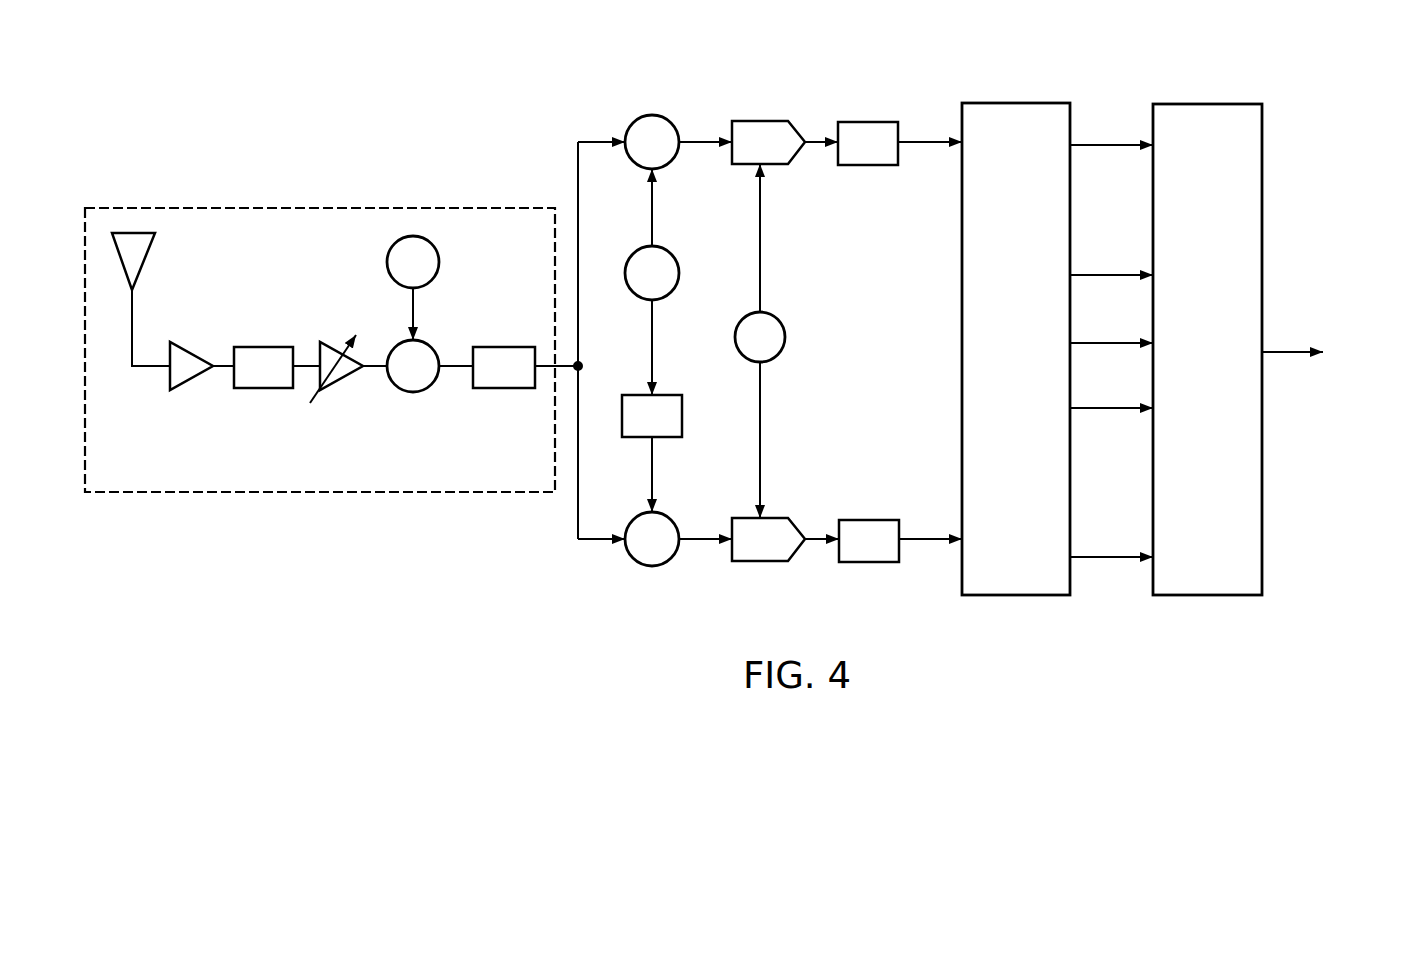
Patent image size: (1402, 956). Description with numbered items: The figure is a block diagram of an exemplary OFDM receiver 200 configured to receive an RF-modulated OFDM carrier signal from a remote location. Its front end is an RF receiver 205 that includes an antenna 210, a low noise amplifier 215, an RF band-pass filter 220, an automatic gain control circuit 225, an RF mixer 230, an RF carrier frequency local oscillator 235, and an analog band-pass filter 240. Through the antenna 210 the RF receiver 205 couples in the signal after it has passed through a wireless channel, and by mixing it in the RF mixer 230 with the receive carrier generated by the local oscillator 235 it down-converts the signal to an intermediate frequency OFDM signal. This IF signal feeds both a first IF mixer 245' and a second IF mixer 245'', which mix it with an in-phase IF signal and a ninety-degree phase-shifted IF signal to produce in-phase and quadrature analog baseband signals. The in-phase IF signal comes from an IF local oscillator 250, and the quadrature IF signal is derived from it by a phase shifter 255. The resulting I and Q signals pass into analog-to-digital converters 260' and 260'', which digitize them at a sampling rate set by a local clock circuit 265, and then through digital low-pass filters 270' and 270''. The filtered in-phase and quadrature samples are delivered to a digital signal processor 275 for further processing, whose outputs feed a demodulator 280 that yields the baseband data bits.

The OFDM receiver 200 is at (398, 607).
The RF receiver 205 is at (332, 243).
The antenna 210 is at (150, 260).
The low noise amplifier 215 is at (191, 388).
The RF band-pass filter 220 is at (263, 389).
The automatic gain control circuit 225 is at (338, 387).
The RF mixer 230 is at (412, 393).
The RF carrier frequency local oscillator 235 is at (440, 262).
The analog band-pass filter 240 is at (507, 389).
The first IF mixer 245' is at (675, 117).
The second IF mixer 245'' is at (678, 565).
The IF local oscillator 250 is at (679, 267).
The 90° phase shifter 255 is at (682, 418).
The analog-to-digital converter 260' is at (781, 115).
The analog-to-digital converter 260'' is at (785, 565).
The local clock circuit 265 is at (785, 335).
The digital low-pass filter 270' is at (898, 115).
The digital low-pass filter 270'' is at (900, 562).
The digital signal processor 275 is at (995, 383).
The demodulator 280 is at (1188, 383).